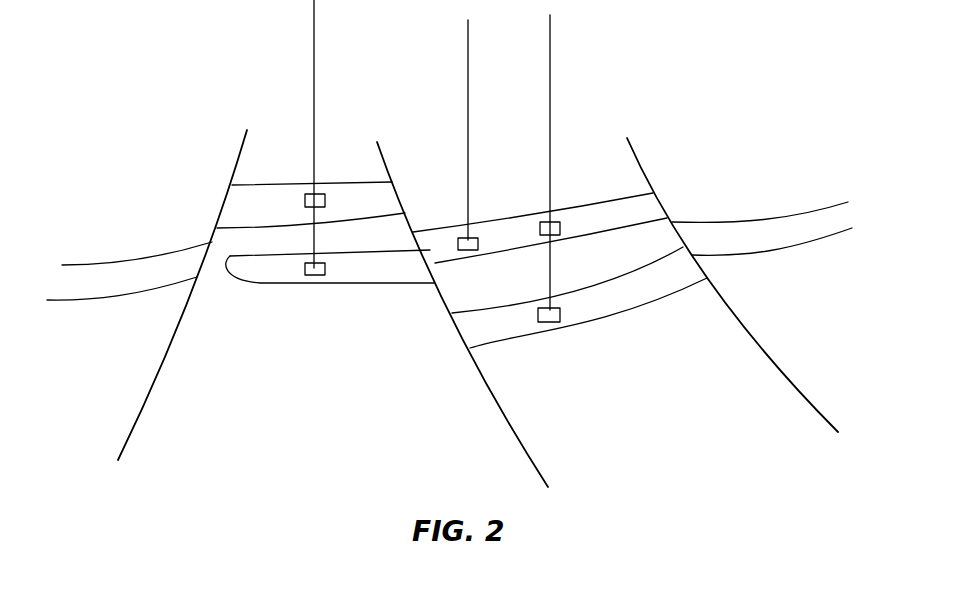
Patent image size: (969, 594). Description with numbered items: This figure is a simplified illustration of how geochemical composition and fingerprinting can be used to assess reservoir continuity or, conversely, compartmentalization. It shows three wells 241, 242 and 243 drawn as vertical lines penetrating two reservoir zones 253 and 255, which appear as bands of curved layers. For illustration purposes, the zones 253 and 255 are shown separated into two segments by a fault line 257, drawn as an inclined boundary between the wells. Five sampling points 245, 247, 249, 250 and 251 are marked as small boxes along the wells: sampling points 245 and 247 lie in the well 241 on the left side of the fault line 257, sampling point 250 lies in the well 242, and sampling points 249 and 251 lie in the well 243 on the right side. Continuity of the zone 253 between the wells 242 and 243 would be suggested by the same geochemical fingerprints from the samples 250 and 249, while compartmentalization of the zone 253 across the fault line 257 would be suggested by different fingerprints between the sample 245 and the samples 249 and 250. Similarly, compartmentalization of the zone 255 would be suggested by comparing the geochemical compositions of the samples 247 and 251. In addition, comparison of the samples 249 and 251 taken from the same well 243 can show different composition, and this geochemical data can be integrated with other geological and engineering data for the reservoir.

The well 241 is at (315, 38).
The well 242 is at (468, 80).
The well 243 is at (550, 52).
The sampling point 245 is at (303, 200).
The sampling point 247 is at (308, 282).
The sampling point 249 is at (545, 221).
The sampling point 250 is at (457, 243).
The sampling point 251 is at (560, 315).
The zone 253 is at (347, 192).
The zone 255 is at (352, 273).
The fault line 257 is at (385, 155).